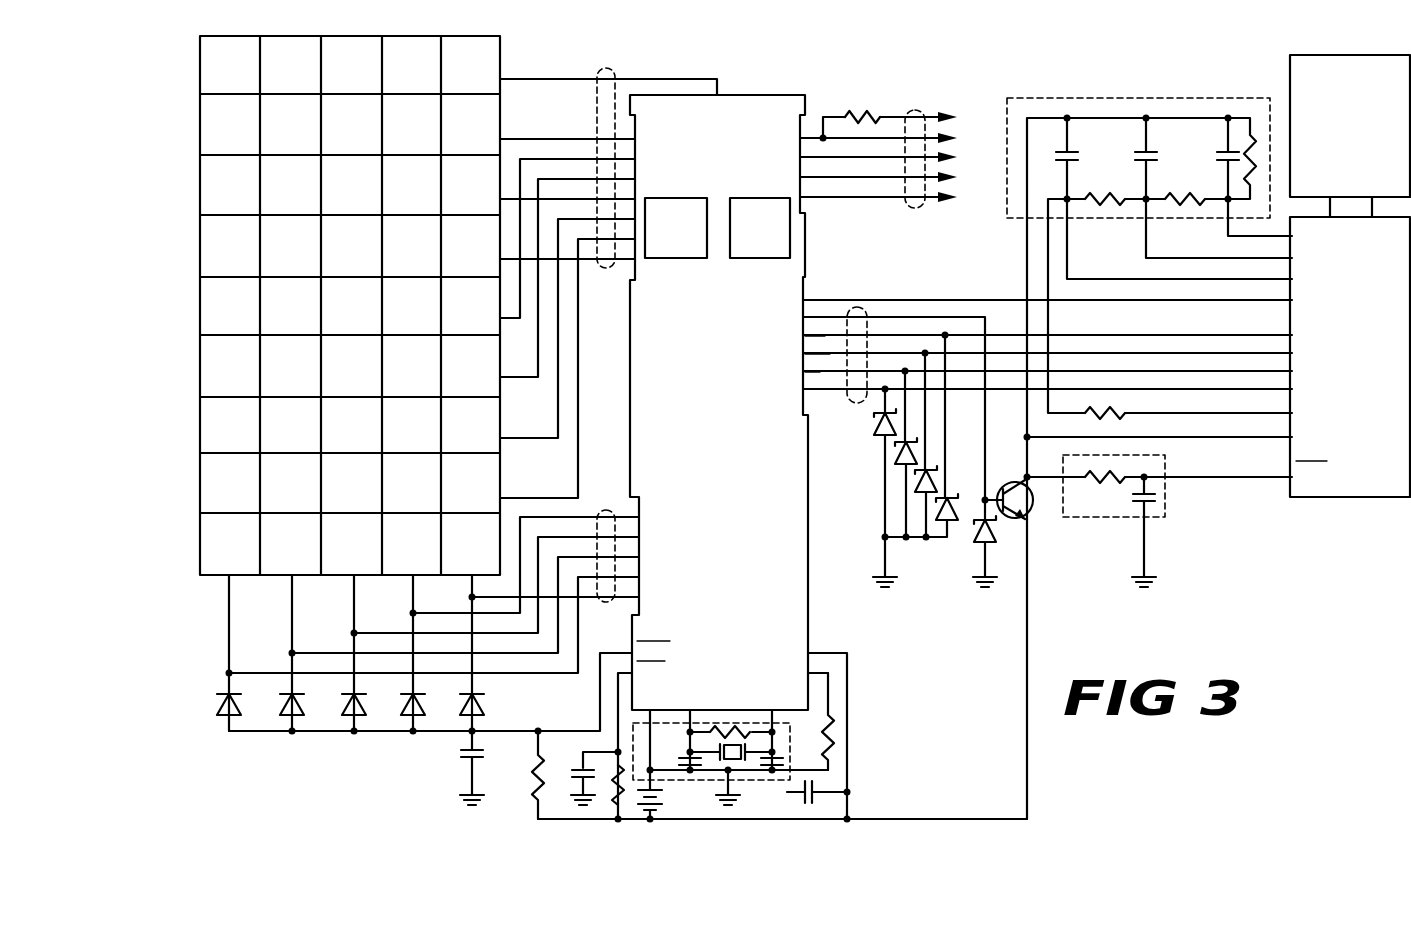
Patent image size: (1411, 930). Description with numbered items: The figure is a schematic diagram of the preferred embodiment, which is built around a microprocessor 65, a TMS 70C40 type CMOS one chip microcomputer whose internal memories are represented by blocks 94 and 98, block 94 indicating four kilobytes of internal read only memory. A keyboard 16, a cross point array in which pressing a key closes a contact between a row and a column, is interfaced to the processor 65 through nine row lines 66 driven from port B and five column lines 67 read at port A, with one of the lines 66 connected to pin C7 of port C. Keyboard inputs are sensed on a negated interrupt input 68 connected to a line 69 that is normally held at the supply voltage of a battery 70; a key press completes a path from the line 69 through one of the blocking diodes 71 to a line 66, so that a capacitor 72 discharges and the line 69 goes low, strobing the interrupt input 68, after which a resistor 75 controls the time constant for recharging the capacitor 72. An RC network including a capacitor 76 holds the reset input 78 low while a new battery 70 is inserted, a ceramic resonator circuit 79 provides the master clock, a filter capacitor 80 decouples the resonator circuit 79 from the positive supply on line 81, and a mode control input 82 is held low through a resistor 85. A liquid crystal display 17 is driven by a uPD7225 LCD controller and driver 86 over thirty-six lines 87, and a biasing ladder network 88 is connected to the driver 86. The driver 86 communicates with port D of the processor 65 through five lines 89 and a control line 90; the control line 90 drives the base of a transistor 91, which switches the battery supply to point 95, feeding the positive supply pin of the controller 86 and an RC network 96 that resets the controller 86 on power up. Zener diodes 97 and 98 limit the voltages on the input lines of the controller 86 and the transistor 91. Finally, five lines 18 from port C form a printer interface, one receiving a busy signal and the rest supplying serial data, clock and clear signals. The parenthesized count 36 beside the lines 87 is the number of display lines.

The keyboard 16 is at (500, 63).
The liquid crystal display 17 is at (1370, 59).
The printer interface lines 18 is at (920, 109).
The display segment lines 36 is at (1354, 207).
The microprocessor 65 is at (764, 100).
The row lines 66 is at (605, 71).
The column lines 67 is at (612, 501).
The negated interrupt input 68 is at (630, 653).
The line 69 is at (492, 731).
The battery 70 is at (664, 801).
The blocking diodes 71 is at (205, 703).
The capacitor 72 is at (466, 756).
The resistor 75 is at (536, 786).
The capacitor 76 is at (578, 768).
The reset input 78 is at (631, 673).
The ceramic resonator circuit 79 is at (791, 726).
The filter capacitor 80 is at (807, 795).
The line 81 is at (833, 653).
The mode control input 82 is at (832, 673).
The resistor 85 is at (826, 745).
The LCD controller and driver 86 is at (1290, 313).
The display lines 87 is at (1378, 208).
The biasing ladder network 88 is at (1111, 97).
The five lines 89 is at (851, 398).
The control line 90 is at (877, 300).
The transistor 91 is at (1016, 482).
The internal read only memory block 94 is at (690, 260).
The point 95 is at (1024, 438).
The RC network 96 is at (1074, 521).
The zener diodes 97 is at (881, 478).
The zener diode 98 is at (745, 260).